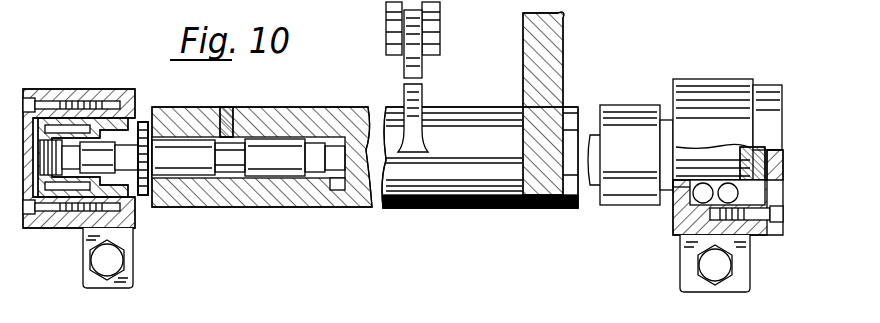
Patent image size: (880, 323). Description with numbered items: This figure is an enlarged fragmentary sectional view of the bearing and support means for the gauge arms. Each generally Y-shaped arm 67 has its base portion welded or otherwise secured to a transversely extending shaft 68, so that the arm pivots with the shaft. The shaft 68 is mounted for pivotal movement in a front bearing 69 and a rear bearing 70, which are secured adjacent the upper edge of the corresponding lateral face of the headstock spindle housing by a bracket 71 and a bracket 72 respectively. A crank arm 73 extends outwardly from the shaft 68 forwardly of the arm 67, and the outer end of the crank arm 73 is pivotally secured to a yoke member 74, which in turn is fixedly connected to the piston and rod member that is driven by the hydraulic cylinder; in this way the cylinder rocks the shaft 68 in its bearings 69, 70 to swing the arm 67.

The arm 67 is at (563, 51).
The shaft 68 is at (282, 110).
The front bearing 69 is at (76, 88).
The rear bearing 70 is at (709, 79).
The bracket 71 is at (128, 259).
The bracket 72 is at (684, 263).
The crank arm 73 is at (423, 92).
The yoke member 74 is at (441, 43).